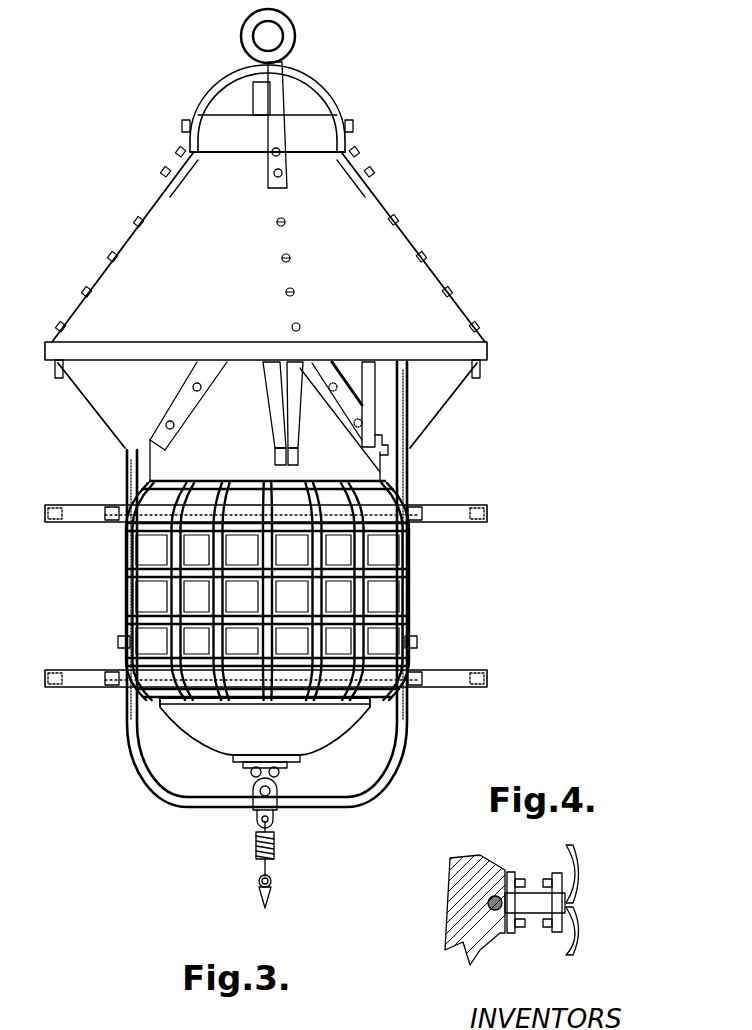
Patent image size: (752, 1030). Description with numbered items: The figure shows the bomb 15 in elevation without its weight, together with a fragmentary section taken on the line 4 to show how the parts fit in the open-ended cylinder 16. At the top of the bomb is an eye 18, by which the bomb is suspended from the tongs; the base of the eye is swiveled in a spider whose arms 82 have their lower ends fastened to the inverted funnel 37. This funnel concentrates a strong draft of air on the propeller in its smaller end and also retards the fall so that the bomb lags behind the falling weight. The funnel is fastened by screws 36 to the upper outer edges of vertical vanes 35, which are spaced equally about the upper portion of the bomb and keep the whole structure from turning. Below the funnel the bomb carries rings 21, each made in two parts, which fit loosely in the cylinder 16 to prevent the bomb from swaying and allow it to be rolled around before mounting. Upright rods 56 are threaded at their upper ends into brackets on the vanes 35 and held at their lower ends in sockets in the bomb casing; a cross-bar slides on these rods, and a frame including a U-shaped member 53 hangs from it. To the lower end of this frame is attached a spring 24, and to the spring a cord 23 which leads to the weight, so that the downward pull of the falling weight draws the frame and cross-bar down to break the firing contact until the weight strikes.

In FIG. 3, the eye 18 is at (242, 35).
In FIG. 3, the arms 82 is at (339, 85).
In FIG. 3, the inverted funnel 37 is at (268, 247).
In FIG. 3, the screws 36 is at (136, 224).
In FIG. 3, the rings 21 is at (485, 344).
In FIG. 4, the rings 21 is at (572, 860).
In FIG. 3, the upright rods 56 is at (370, 410).
In FIG. 3, the vertical vanes 35 is at (288, 386).
In FIG. 3, the U-shaped member 53 is at (127, 476).
In FIG. 4, the U-shaped member 53 is at (466, 906).
In FIG. 3, the section line 4 is at (447, 513).
In FIG. 3, the bomb 15 is at (166, 595).
In FIG. 3, the spring 24 is at (256, 848).
In FIG. 3, the cord 23 is at (266, 907).
In FIG. 4, the open-ended cylinder 16 is at (456, 956).